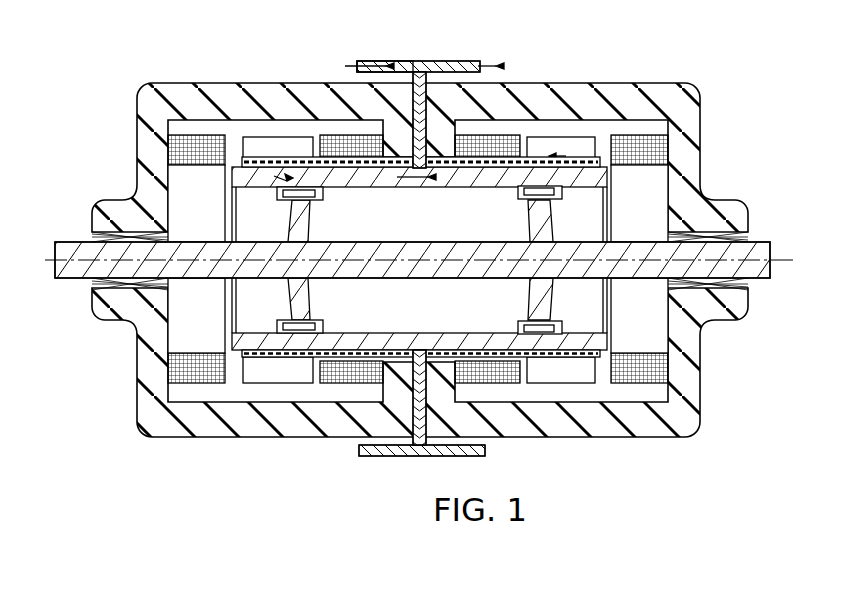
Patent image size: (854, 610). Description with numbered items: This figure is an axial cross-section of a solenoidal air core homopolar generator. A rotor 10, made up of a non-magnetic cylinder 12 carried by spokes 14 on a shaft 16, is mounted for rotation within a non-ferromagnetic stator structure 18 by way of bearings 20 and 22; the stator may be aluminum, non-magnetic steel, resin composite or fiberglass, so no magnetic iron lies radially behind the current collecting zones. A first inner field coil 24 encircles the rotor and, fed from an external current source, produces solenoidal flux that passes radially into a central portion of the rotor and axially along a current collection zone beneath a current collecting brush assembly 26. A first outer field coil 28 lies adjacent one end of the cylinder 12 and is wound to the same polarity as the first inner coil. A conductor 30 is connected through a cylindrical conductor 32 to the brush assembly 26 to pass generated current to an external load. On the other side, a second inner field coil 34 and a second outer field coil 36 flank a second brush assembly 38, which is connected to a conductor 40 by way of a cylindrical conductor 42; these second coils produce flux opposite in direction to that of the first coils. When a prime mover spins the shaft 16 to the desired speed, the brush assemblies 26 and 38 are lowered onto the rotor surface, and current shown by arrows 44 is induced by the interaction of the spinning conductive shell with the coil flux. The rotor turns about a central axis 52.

The rotor 10 is at (392, 187).
The non-magnetic cylinder 12 is at (386, 334).
The spokes 14 is at (531, 222).
The shaft 16 is at (445, 268).
The non-ferromagnetic stator structure 18 is at (150, 106).
The bearing 20 is at (90, 232).
The bearing 22 is at (750, 218).
The first inner field coil 24 is at (503, 142).
The current collecting brush assembly 26 is at (560, 148).
The first outer field coil 28 is at (644, 142).
The conductor 30 is at (448, 60).
The cylindrical conductor 32 is at (485, 176).
The second inner field coil 34 is at (336, 142).
The second outer field coil 36 is at (201, 145).
The second brush assembly 38 is at (255, 147).
The conductor 40 is at (399, 64).
The cylindrical conductor 42 is at (366, 178).
The arrows 44 is at (302, 155).
The central axis 52 is at (782, 262).